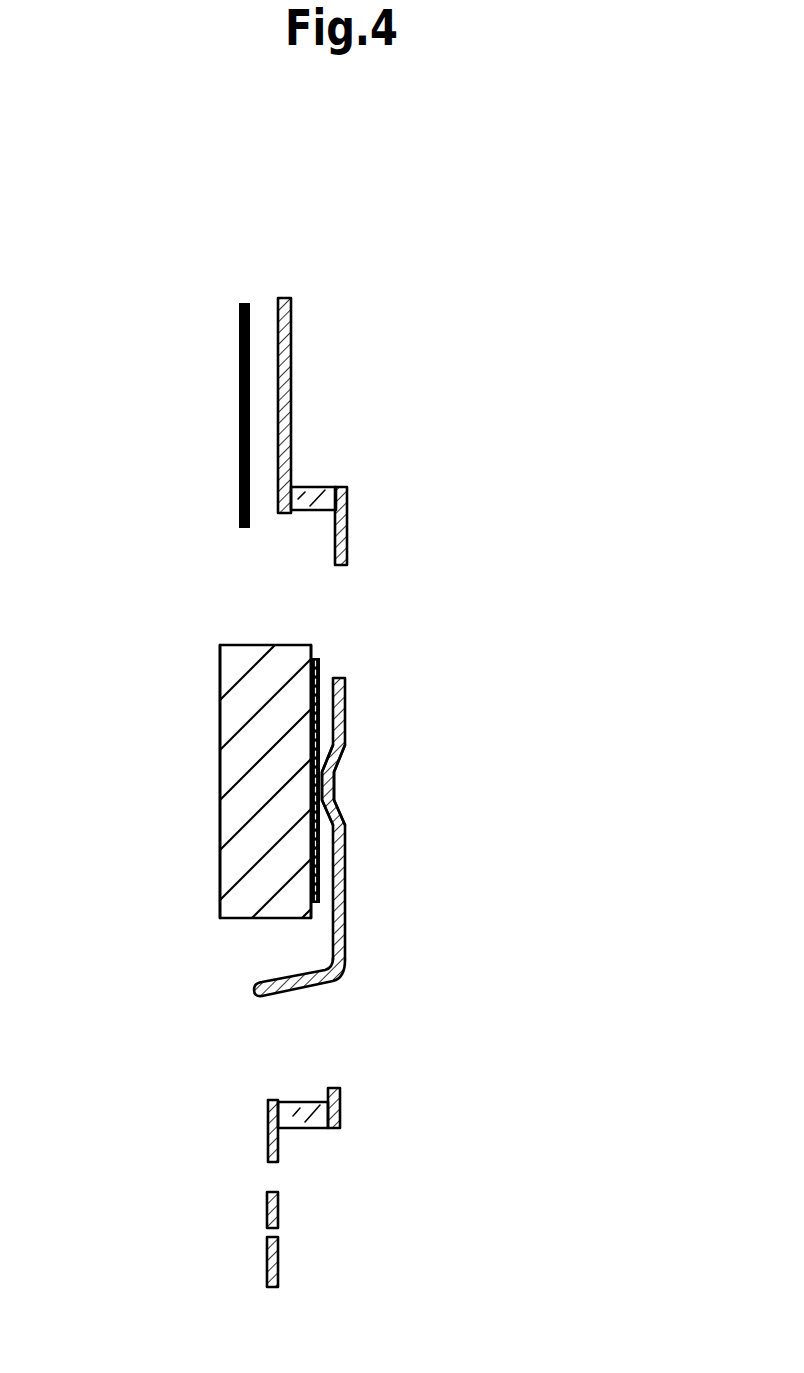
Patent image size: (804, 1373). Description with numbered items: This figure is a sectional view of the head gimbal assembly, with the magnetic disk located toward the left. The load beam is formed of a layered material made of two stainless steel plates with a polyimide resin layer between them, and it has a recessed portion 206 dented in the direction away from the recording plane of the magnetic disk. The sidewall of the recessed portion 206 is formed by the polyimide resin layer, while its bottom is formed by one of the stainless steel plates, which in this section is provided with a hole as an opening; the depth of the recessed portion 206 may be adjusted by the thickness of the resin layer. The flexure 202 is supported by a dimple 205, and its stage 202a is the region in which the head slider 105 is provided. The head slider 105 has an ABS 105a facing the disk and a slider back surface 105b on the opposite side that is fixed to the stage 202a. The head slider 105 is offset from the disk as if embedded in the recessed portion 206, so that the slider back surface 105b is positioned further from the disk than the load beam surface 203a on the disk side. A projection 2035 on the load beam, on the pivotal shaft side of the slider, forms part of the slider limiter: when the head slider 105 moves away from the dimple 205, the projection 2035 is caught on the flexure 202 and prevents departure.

The head slider 105 is at (235, 772).
The ABS 105a is at (219, 868).
The slider back surface 105b is at (322, 884).
The flexure 202 is at (243, 477).
The stage 202a is at (321, 657).
The surface of the load beam 203a is at (268, 1118).
The dimple 205 is at (334, 780).
The recessed portion 206 is at (279, 587).
The projection 2035 is at (340, 984).